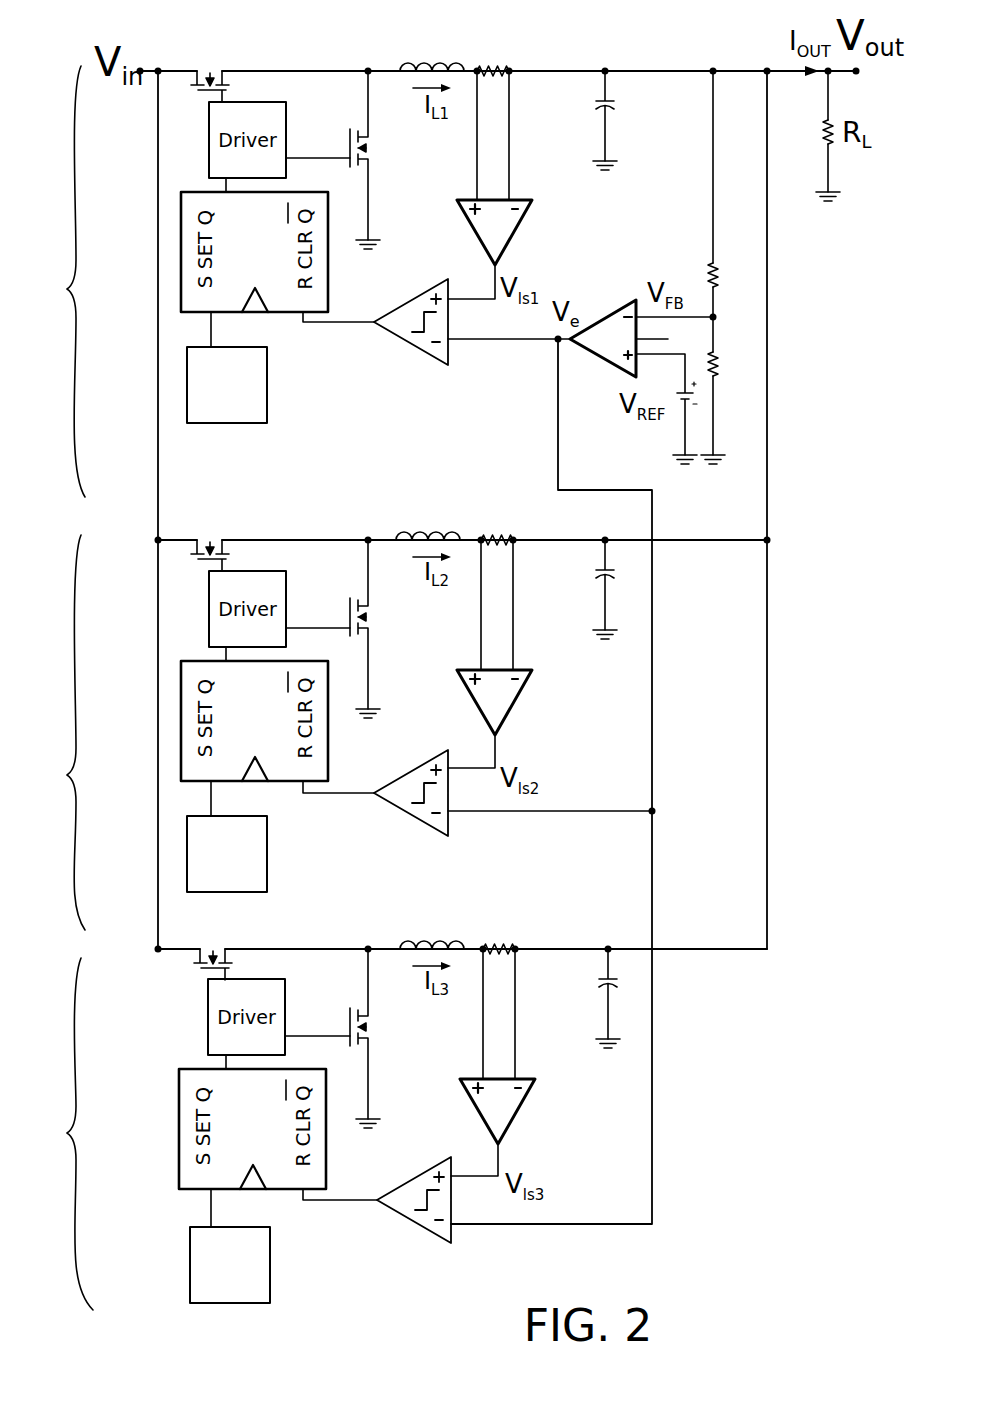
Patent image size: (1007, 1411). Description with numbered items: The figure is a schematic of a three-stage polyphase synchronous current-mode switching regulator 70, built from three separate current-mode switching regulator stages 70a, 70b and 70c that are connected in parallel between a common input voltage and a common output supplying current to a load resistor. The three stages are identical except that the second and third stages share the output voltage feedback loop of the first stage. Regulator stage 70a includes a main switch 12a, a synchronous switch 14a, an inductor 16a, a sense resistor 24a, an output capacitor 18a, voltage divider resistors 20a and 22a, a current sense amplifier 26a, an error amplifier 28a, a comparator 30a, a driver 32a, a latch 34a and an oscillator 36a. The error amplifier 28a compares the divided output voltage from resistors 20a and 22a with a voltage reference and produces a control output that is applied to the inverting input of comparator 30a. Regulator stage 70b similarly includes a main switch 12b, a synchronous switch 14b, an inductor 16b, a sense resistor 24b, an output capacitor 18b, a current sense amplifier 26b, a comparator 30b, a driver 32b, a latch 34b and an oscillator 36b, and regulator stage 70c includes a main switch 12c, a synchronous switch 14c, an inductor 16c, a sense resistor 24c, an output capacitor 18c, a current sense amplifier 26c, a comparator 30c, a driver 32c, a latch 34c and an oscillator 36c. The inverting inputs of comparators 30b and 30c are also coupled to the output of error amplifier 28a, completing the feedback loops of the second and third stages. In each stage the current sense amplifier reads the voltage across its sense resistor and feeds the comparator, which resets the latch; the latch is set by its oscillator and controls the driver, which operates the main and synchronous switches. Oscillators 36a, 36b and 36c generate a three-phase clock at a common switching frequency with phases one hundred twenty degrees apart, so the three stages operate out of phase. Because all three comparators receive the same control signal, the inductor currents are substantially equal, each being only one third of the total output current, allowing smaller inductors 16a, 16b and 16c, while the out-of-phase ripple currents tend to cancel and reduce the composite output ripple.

The regulator 70 is at (642, 51).
The regulator stage 70a is at (57, 281).
The regulator stage 70b is at (57, 732).
The regulator stage 70c is at (65, 1134).
The main switch 12a is at (212, 72).
The main switch 12b is at (212, 541).
The main switch 12c is at (214, 950).
The synchronous switch 14a is at (382, 160).
The synchronous switch 14b is at (383, 629).
The synchronous switch 14c is at (381, 1039).
The inductor 16a is at (432, 54).
The inductor 16b is at (428, 523).
The inductor 16c is at (432, 933).
The output capacitor 18a is at (626, 120).
The output capacitor 18b is at (584, 589).
The output capacitor 18c is at (589, 998).
The voltage divider resistor 20a is at (735, 194).
The voltage divider resistor 22a is at (735, 386).
The sense resistor 24a is at (492, 57).
The sense resistor 24b is at (497, 526).
The sense resistor 24c is at (498, 936).
The current sense amplifier 26a is at (515, 228).
The current sense amplifier 26b is at (515, 698).
The current sense amplifier 26c is at (518, 1107).
The error amplifier 28a is at (612, 313).
The comparator 30a is at (410, 345).
The comparator 30b is at (410, 816).
The comparator 30c is at (413, 1223).
The driver 32a is at (286, 118).
The driver 32b is at (286, 587).
The driver 32c is at (285, 995).
The latch 34a is at (328, 281).
The latch 34b is at (328, 750).
The latch 34c is at (326, 1158).
The oscillator 36a is at (267, 380).
The oscillator 36b is at (267, 852).
The oscillator 36c is at (270, 1240).